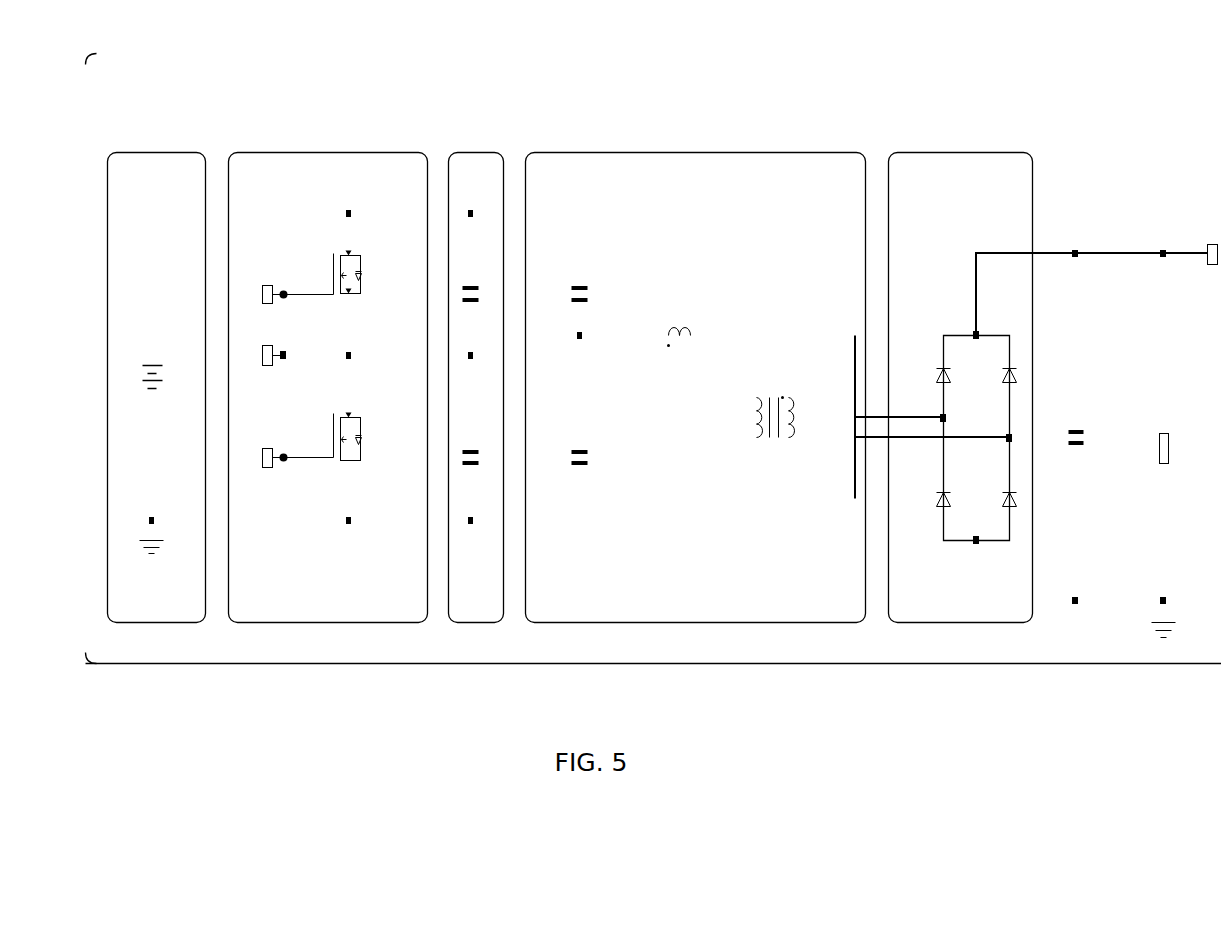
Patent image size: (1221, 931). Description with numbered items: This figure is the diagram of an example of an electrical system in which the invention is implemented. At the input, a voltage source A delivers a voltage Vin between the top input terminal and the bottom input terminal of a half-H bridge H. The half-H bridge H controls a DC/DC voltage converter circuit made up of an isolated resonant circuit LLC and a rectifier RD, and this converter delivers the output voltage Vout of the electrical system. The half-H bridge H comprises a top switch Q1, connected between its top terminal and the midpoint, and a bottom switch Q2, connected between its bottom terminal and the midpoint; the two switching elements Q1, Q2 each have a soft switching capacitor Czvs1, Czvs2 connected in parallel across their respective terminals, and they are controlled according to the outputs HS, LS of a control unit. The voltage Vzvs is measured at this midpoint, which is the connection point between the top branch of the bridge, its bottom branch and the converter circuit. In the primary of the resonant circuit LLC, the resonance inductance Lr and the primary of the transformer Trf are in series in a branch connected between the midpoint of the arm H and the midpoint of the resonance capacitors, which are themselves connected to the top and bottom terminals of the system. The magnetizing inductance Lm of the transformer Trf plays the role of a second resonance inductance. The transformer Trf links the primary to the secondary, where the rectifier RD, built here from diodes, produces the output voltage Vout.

The voltage source A is at (120, 152).
The half-H bridge H is at (298, 152).
The resonant circuit LLC is at (634, 152).
The rectifier RD is at (902, 152).
The transformer Trf is at (760, 314).
The input voltage Vin is at (171, 459).
The high-side control output HS is at (284, 291).
The low-side control output LS is at (286, 453).
The midpoint voltage Vzvs is at (284, 353).
The top switch Q1 is at (365, 273).
The bottom switch Q2 is at (365, 437).
The soft switching capacitor Czvs1 is at (503, 295).
The soft switching capacitor Czvs2 is at (503, 458).
The resonance inductance Lr is at (681, 357).
The magnetizing inductance Lm is at (743, 418).
The output voltage Vout is at (1164, 248).